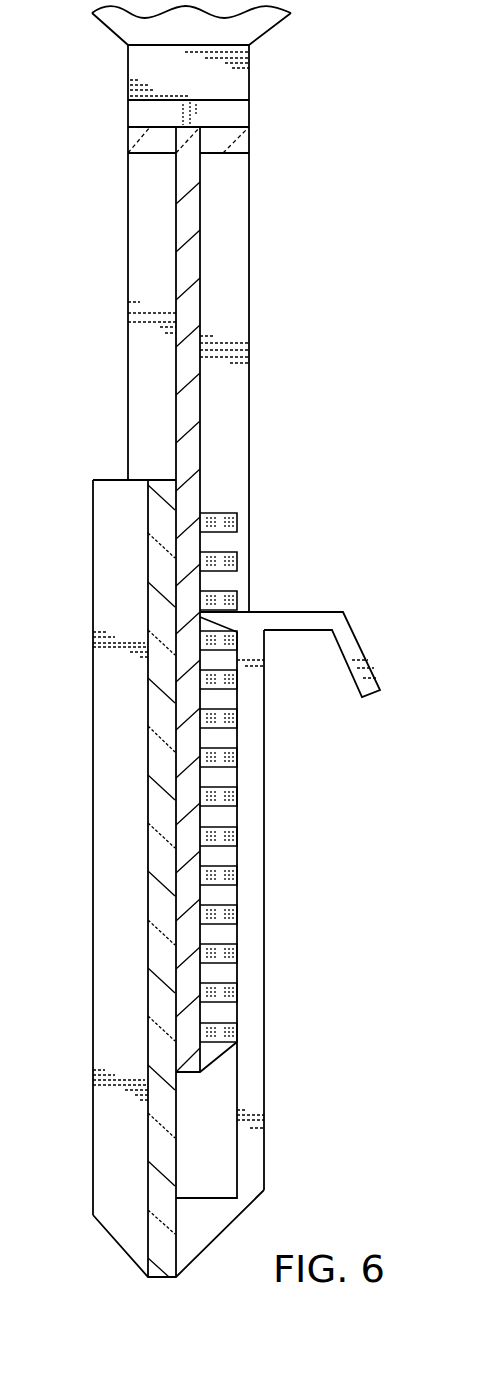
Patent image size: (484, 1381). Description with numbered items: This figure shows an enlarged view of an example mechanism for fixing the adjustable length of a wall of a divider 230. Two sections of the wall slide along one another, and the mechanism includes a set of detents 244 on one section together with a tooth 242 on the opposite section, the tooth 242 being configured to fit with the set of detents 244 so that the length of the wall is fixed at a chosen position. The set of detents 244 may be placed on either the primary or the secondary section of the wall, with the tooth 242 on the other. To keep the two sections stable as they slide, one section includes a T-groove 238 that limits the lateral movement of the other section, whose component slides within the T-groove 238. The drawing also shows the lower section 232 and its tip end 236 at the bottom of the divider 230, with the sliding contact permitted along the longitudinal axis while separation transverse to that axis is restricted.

The divider 230 is at (230, 286).
The lower housing 232 is at (108, 844).
The tip end 236 is at (160, 1278).
The T-groove 238 is at (240, 80).
The tooth 242 is at (361, 648).
The set of detents 244 is at (228, 590).